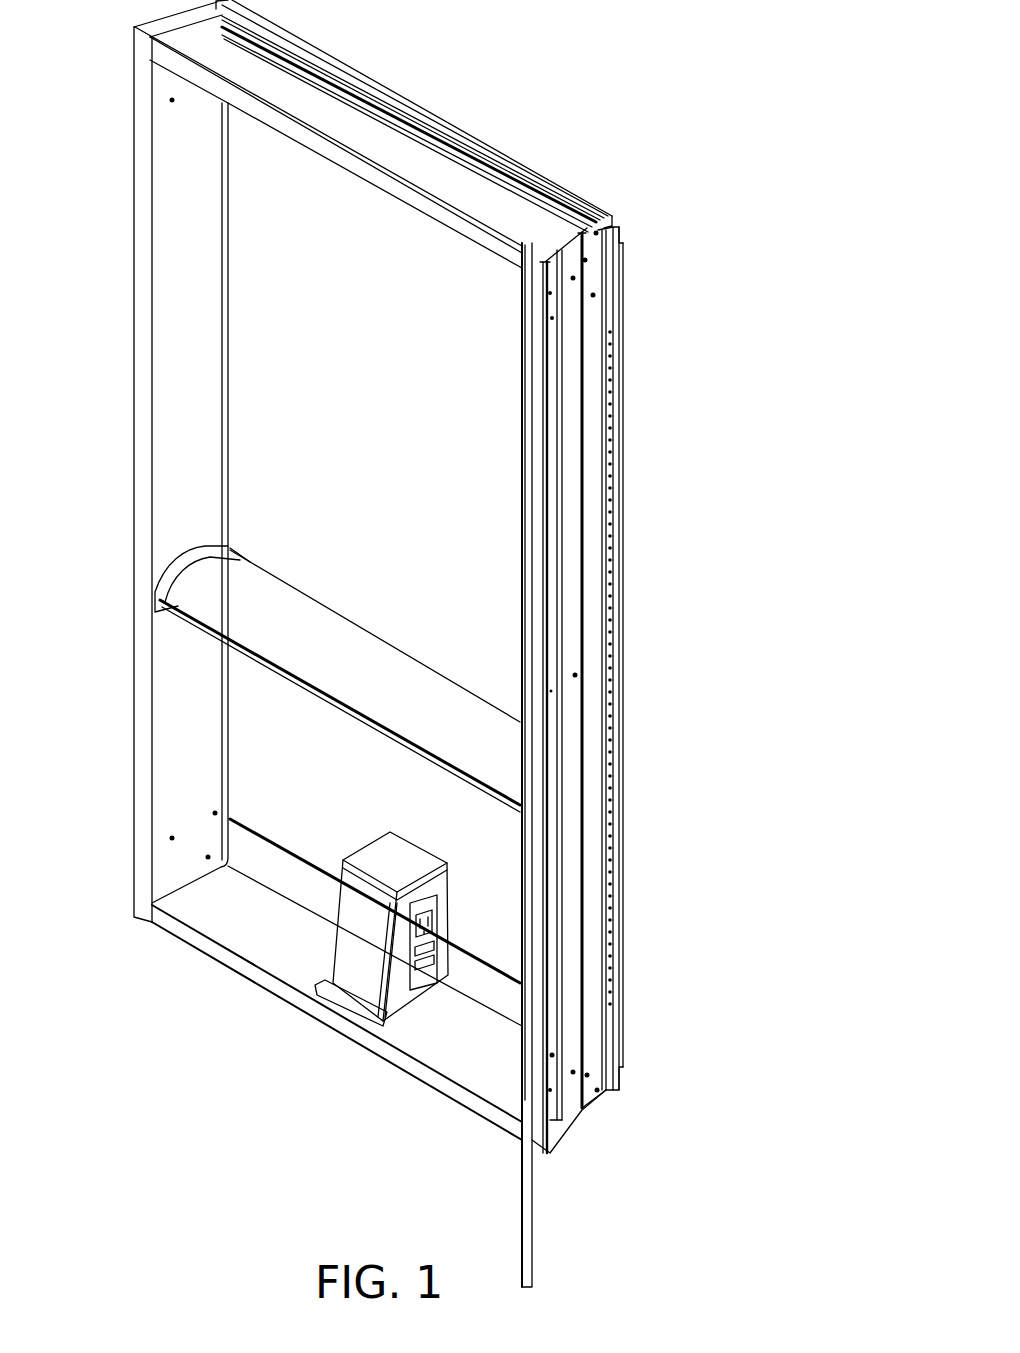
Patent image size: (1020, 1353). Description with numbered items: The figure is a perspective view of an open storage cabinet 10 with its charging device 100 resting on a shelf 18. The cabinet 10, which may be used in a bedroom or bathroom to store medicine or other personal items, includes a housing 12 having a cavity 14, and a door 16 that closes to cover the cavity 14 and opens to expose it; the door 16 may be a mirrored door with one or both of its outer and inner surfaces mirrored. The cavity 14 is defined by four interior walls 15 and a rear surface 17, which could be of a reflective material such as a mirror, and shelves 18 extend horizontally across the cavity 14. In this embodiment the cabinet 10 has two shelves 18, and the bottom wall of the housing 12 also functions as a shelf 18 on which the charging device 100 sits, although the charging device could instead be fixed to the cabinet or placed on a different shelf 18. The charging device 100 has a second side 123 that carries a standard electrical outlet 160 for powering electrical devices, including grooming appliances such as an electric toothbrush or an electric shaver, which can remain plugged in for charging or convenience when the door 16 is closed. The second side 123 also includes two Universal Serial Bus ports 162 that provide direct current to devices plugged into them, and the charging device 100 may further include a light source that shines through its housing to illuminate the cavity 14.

The storage cabinet 10 is at (678, 138).
The housing 12 is at (447, 176).
The cavity 14 is at (343, 208).
The interior walls 15 is at (190, 375).
The door 16 is at (527, 1218).
The rear surface 17 is at (343, 440).
The shelf 18 is at (228, 547).
The charging device 100 is at (340, 950).
The second side 123 is at (420, 895).
The electrical outlet 160 is at (433, 923).
The USB ports 162 is at (435, 968).